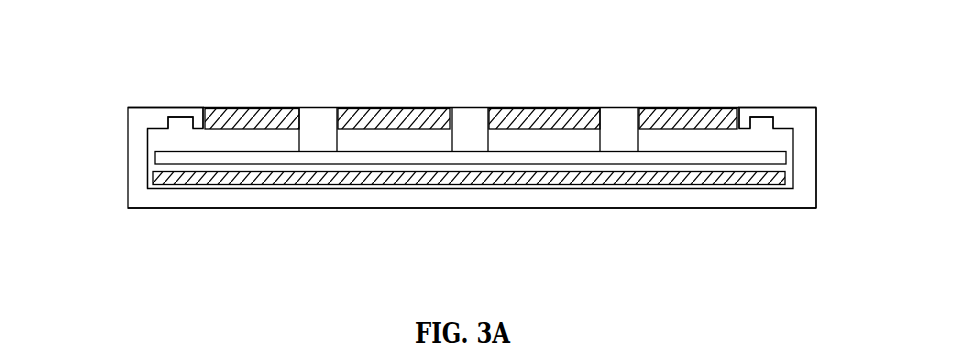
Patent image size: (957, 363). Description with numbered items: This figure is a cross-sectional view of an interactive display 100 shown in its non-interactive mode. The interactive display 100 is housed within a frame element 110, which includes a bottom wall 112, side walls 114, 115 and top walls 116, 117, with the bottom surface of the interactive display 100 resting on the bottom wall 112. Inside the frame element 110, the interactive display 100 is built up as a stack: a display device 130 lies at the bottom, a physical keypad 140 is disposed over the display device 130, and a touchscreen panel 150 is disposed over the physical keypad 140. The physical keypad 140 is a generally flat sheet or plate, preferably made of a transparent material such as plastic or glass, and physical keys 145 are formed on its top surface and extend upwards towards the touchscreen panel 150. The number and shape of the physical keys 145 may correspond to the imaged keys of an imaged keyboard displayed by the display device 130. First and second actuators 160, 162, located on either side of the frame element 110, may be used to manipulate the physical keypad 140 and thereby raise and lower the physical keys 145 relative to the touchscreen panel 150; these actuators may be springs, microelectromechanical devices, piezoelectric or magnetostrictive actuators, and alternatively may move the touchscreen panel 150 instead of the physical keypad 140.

The interactive display 100 is at (108, 53).
The frame element 110 is at (125, 147).
The bottom wall 112 is at (306, 195).
The side wall 114 is at (138, 175).
The side wall 115 is at (807, 160).
The top wall 116 is at (161, 115).
The top wall 117 is at (788, 120).
The display device 130 is at (627, 182).
The physical keypad 140 is at (541, 138).
The physical key 145 is at (463, 107).
The touchscreen panel 150 is at (370, 118).
The first actuator 160 is at (179, 124).
The second actuator 162 is at (762, 123).